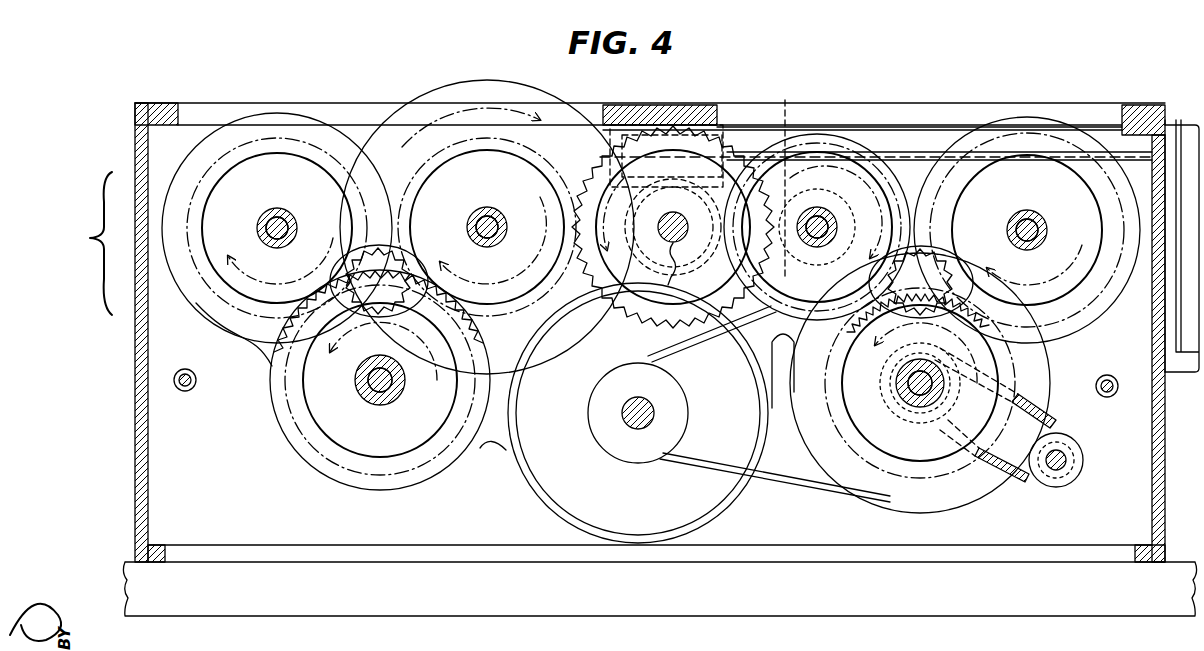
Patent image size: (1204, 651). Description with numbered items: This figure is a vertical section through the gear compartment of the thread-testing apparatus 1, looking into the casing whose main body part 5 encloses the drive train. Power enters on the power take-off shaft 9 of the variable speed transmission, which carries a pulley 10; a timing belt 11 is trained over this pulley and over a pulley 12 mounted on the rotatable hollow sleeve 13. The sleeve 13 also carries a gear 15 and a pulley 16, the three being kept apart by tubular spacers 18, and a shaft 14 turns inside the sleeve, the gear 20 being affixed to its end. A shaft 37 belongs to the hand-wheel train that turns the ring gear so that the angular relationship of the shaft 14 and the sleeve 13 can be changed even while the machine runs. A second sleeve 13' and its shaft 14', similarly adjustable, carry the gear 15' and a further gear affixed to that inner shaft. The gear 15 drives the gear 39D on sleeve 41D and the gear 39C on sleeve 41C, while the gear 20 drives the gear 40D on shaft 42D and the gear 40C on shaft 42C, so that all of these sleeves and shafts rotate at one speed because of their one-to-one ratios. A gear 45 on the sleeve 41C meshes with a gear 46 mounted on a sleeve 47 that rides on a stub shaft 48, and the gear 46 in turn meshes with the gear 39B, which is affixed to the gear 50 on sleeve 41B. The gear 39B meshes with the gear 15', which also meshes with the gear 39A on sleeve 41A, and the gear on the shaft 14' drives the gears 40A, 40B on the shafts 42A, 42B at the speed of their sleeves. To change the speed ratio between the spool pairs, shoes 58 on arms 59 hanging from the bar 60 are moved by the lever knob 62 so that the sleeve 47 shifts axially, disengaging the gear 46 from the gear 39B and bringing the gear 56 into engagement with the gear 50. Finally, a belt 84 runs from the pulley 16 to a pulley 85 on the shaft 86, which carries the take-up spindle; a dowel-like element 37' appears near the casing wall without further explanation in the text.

The apparatus 1 is at (88, 238).
The main body part 5 is at (160, 103).
The power take-off shaft 9 is at (622, 412).
The pulley 10 is at (689, 413).
The timing belt 11 is at (793, 503).
The pulley 12 is at (841, 496).
The hollow sleeve 13 is at (920, 383).
The sleeve 13' is at (380, 380).
The shaft 14 is at (939, 373).
The shaft 14' is at (361, 394).
The gear 15 is at (894, 383).
The gear 15' is at (380, 380).
The pulley 16 is at (947, 393).
The tubular spacers 18 is at (912, 411).
The gear 20 is at (402, 262).
The shaft 37 is at (1105, 370).
The dowel pin 37' is at (183, 365).
The gear 39A is at (277, 228).
The gear 39B is at (487, 227).
The gear 39C is at (866, 169).
The gear 39D is at (1028, 165).
The gear 40A is at (336, 247).
The gear 40B is at (446, 262).
The gear 40C is at (874, 273).
The gear 40D is at (969, 265).
The sleeve 41A is at (257, 222).
The sleeve 41B is at (470, 217).
The sleeve 41C is at (820, 201).
The sleeve 41D is at (1021, 208).
The shaft 42A is at (262, 236).
The shaft 42B is at (504, 221).
The shaft 42C is at (804, 246).
The shaft 42D is at (1038, 216).
The gear 45 is at (876, 178).
The gear 46 is at (584, 195).
The sleeve 47 is at (673, 221).
The stub shaft 48 is at (667, 273).
The gear 50 is at (488, 84).
The gear 56 is at (697, 193).
The shoes 58 is at (670, 235).
The arms 59 is at (664, 112).
The bar 60 is at (939, 129).
The knob 62 is at (1179, 128).
The belt 84 is at (1040, 405).
The pulley 85 is at (1069, 453).
The shaft 86 is at (1063, 477).